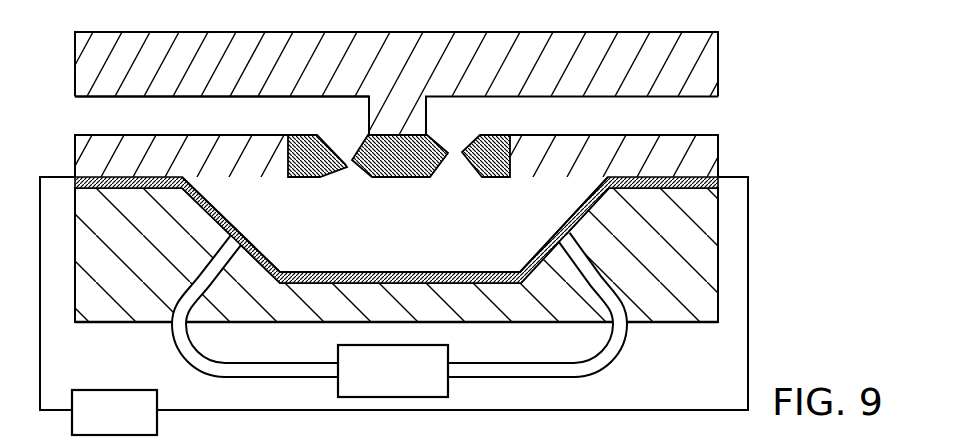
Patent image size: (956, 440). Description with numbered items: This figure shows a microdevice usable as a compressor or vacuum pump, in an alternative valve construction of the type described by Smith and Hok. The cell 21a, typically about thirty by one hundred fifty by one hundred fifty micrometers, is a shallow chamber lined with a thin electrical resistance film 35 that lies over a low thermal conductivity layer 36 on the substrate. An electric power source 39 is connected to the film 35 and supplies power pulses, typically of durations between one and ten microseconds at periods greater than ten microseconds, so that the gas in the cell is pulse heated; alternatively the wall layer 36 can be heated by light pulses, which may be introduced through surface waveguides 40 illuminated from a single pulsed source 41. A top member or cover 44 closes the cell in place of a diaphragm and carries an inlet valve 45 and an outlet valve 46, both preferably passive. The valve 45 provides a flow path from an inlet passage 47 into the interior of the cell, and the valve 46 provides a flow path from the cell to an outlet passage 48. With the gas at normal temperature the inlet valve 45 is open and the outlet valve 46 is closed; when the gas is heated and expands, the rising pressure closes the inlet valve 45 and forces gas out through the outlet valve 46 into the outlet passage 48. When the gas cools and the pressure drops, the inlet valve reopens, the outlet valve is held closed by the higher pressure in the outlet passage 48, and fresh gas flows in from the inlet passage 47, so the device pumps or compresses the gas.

The top member or cover 44 is at (702, 48).
The outlet passage 48 is at (688, 99).
The inlet passage 47 is at (153, 94).
The inlet valve 45 is at (315, 136).
The outlet valve 46 is at (489, 141).
The cell 21a is at (395, 224).
The thin electrical resistance film 35 is at (427, 273).
The low thermal conductivity layer 36 is at (507, 292).
The surface waveguides 40 is at (203, 272).
The pulsed source 41 is at (393, 371).
The electric power source 39 is at (394, 306).